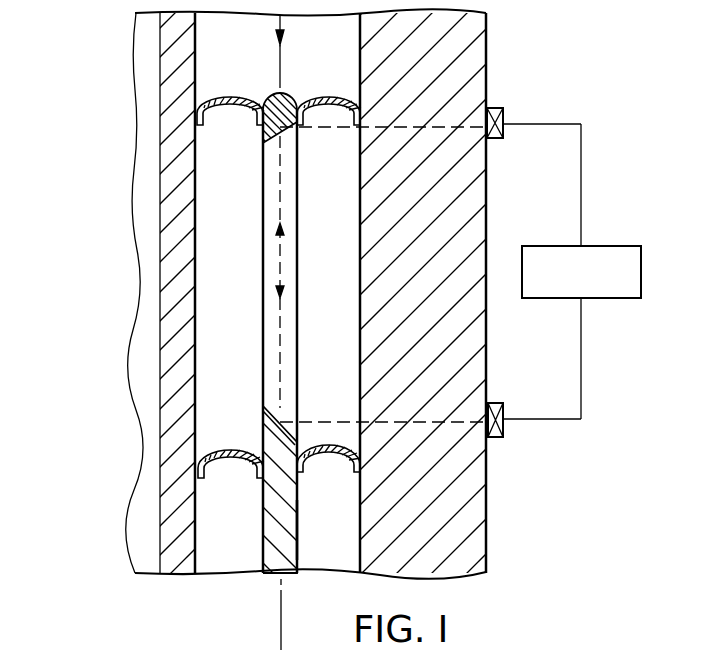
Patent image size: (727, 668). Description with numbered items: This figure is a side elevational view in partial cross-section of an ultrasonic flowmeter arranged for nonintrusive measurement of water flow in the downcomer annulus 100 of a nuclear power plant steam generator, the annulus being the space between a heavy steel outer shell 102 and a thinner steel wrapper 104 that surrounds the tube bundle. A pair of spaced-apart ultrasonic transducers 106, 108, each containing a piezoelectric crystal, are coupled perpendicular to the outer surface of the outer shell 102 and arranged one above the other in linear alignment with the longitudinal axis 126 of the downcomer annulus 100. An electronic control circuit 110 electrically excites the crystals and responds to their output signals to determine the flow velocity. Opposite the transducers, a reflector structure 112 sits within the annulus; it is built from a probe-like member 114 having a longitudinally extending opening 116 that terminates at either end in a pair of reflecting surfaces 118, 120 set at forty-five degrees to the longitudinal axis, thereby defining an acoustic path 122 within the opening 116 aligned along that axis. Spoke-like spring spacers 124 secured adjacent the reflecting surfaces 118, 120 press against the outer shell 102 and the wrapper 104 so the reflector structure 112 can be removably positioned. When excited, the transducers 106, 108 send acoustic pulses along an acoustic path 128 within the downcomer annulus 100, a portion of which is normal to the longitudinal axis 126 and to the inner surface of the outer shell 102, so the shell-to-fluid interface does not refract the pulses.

The downcomer annulus 100 is at (218, 209).
The outer shell 102 is at (462, 32).
The wrapper 104 is at (168, 470).
The ultrasonic transducer 106 is at (495, 108).
The ultrasonic transducer 108 is at (503, 432).
The electronic control circuit 110 is at (550, 253).
The reflector structure 112 is at (262, 501).
The probe-like member 114 is at (297, 528).
The longitudinally extending opening 116 is at (296, 186).
The reflecting surface 118 is at (267, 144).
The reflecting surface 120 is at (270, 407).
The acoustic path 122 is at (282, 262).
The spring spacers 124 is at (226, 96).
The longitudinal axis 126 is at (280, 604).
The acoustic path 128 is at (338, 422).